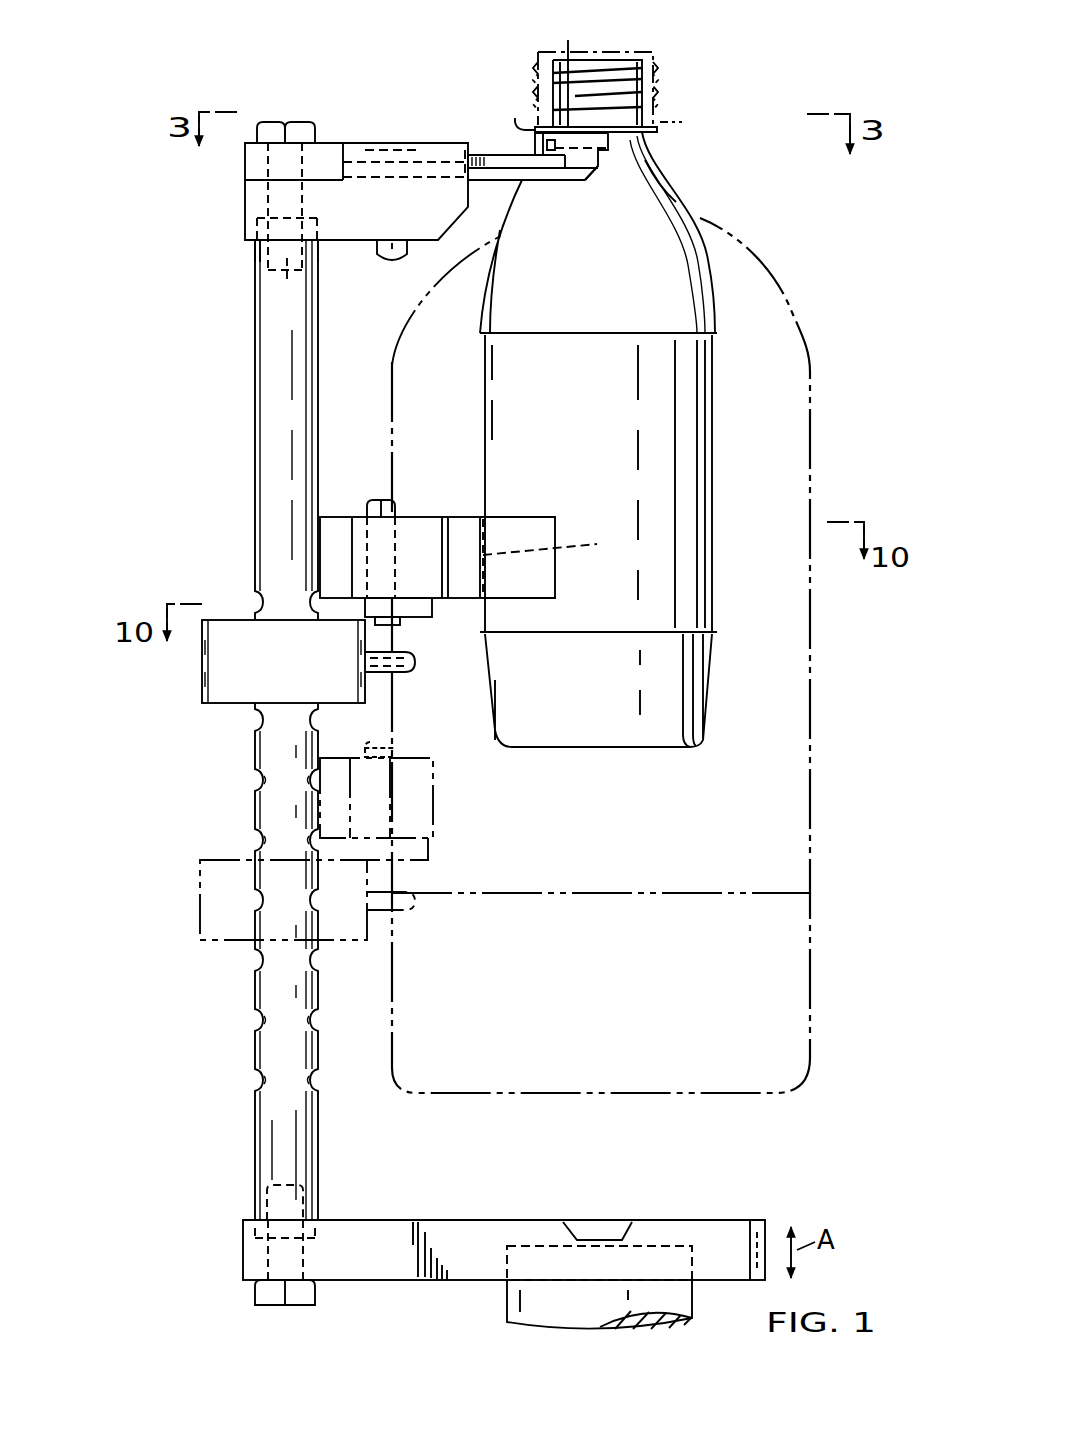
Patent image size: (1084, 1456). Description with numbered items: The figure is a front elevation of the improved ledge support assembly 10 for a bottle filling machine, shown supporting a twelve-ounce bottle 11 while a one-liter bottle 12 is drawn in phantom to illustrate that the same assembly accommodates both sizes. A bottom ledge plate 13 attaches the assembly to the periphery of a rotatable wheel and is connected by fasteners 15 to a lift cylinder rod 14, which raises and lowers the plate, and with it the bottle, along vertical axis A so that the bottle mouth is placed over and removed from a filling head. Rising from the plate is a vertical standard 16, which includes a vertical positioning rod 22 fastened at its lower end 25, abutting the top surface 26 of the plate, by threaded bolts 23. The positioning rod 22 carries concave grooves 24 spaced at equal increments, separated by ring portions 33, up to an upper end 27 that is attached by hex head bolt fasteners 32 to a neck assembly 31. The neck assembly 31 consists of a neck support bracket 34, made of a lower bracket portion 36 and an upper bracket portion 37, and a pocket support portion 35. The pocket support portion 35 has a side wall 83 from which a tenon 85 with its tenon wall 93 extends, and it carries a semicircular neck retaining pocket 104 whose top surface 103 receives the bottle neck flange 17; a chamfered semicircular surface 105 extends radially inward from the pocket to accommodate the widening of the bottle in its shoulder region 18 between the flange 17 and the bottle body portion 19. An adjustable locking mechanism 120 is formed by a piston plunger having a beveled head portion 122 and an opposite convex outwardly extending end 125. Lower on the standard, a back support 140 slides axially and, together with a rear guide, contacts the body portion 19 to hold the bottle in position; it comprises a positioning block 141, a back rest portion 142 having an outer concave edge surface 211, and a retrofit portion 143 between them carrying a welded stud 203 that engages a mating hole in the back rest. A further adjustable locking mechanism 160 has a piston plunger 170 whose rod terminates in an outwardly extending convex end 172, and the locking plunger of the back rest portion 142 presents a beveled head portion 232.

The ledge support assembly 10 is at (146, 134).
The bottle 11 is at (713, 241).
The bottle 12 is at (791, 313).
The bottom ledge plate 13 is at (736, 1226).
The lift cylinder rod 14 is at (517, 1305).
The fasteners 15 is at (607, 1240).
The vertical standard 16 is at (236, 1119).
The bottle neck flange 17 is at (658, 121).
The shoulder region 18 is at (675, 184).
The bottle body portion 19 is at (701, 471).
The vertical positioning rod 22 is at (256, 984).
The threaded bolts 23 is at (267, 1292).
The concave grooves 24 is at (263, 1080).
The lower end 25 is at (312, 1217).
The top surface 26 is at (694, 1222).
The upper end 27 is at (262, 251).
The neck assembly 31 is at (452, 96).
The hex head bolt fasteners 32 is at (308, 123).
The ring portion 33 is at (255, 797).
The neck support bracket 34 is at (244, 207).
The pocket support portion 35 is at (494, 152).
The lower bracket portion 36 is at (339, 248).
The upper bracket portion 37 is at (273, 145).
The side wall 83 is at (541, 174).
The tenon 85 is at (507, 167).
The tenon wall 93 is at (503, 182).
The top surface 103 is at (570, 68).
The neck retaining pocket 104 is at (582, 142).
The chamfered semicircular surface 105 is at (552, 189).
The adjustable locking mechanism 120 is at (409, 262).
The beveled head portion 122 is at (392, 152).
The outwardly extending end 125 is at (388, 266).
The back support 140 is at (349, 496).
The positioning block 141 is at (203, 691).
The back rest portion 142 is at (512, 518).
The retrofit portion 143 is at (440, 610).
The adjustable locking mechanism 160 is at (393, 682).
The piston plunger 170 is at (418, 678).
The outwardly extending convex end 172 is at (417, 662).
The stud 203 is at (397, 510).
The outer concave edge surface 211 is at (557, 549).
The beveled head portion 232 is at (400, 623).